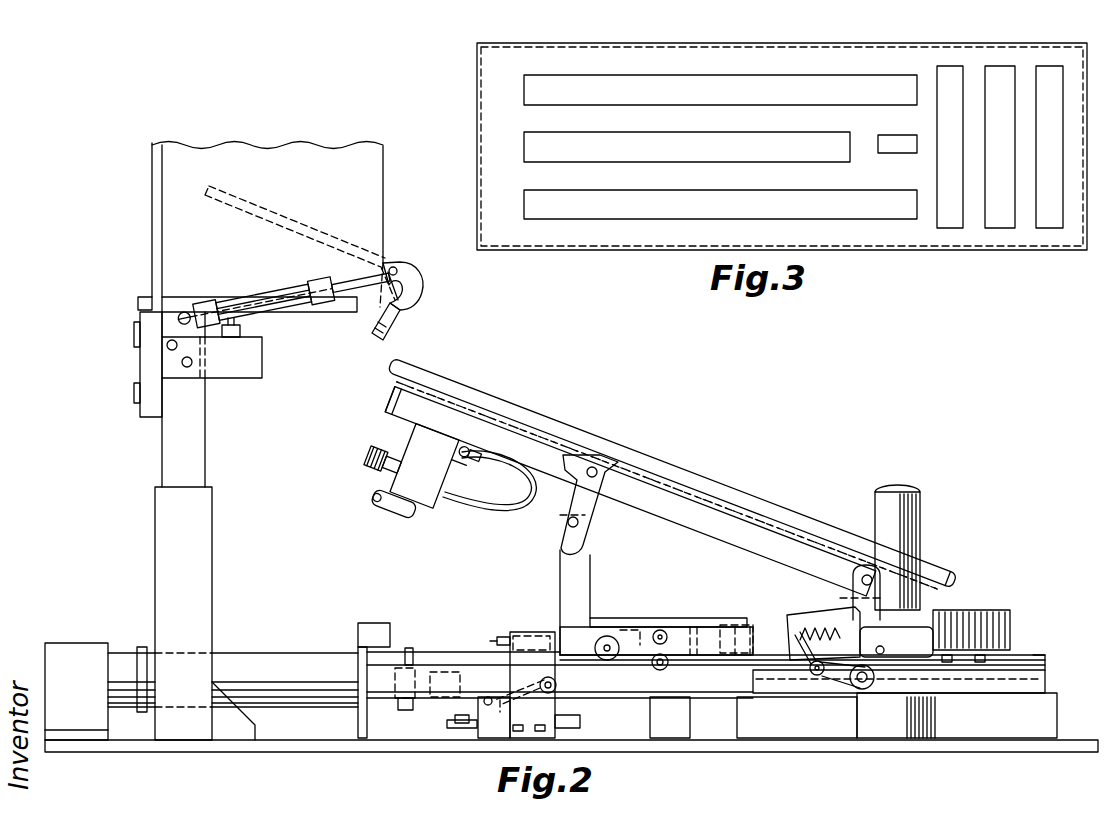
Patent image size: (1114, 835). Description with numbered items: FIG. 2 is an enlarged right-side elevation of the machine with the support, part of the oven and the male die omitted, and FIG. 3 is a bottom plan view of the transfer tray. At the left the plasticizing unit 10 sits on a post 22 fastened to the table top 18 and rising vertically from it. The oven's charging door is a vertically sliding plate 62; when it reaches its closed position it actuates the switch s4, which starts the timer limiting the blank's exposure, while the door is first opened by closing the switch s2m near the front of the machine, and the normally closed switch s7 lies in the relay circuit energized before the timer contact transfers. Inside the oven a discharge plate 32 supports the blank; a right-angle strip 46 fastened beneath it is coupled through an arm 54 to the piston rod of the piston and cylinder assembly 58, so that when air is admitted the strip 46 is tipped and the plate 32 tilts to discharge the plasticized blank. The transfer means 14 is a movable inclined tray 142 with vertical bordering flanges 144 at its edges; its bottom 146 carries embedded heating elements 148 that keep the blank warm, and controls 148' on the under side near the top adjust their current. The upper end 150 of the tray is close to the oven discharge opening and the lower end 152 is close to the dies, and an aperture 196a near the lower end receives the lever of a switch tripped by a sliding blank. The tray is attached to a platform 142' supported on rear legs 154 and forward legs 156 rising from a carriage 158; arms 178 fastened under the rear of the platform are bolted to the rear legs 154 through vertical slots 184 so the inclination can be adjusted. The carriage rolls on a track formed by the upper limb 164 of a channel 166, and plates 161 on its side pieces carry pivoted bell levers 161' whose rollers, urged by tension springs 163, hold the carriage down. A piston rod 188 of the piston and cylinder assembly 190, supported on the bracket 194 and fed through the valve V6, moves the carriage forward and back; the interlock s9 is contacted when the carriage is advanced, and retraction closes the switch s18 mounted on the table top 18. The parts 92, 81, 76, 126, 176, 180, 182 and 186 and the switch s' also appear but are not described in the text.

In FIG. 3, the vertical bordering flanges 144 is at (693, 45).
In FIG. 3, the bottom of the tray 146 is at (663, 236).
In FIG. 3, the heating elements 148 is at (793, 176).
In FIG. 3, the aperture 196a is at (880, 146).
In FIG. 2, the plasticizing unit 10 is at (140, 238).
In FIG. 2, the vertically sliding plate 62 is at (160, 187).
In FIG. 2, the discharge plate 32 is at (282, 235).
In FIG. 2, the switch s4 is at (140, 310).
In FIG. 2, the switch s2m is at (140, 335).
In FIG. 2, the switch s' is at (104, 396).
In FIG. 2, the normally closed switch s7 is at (220, 365).
In FIG. 2, the post 22 is at (195, 437).
In FIG. 2, the piston and cylinder assembly 58 is at (268, 292).
In FIG. 2, the arm 54 is at (416, 288).
In FIG. 2, the right-angle strip 46 is at (382, 337).
In FIG. 2, the upper end of the tray 150 is at (393, 363).
In FIG. 2, the inclined tray 142 is at (630, 491).
In FIG. 2, the platform 142' is at (355, 392).
In FIG. 2, the transfer means 14 is at (730, 476).
In FIG. 2, the lower end of the tray 152 is at (942, 576).
In FIG. 2, the controls 148' is at (416, 472).
In FIG. 2, the arms 178 is at (592, 500).
In FIG. 2, the pivot pin 180 is at (582, 478).
In FIG. 2, the pin 182 is at (570, 528).
In FIG. 2, the vertical slots 184 is at (586, 553).
In FIG. 2, the rear legs 154 is at (582, 590).
In FIG. 2, the table body 186 is at (702, 622).
In FIG. 2, the carriage 158 is at (757, 620).
In FIG. 2, the post 126 is at (882, 507).
In FIG. 2, the lever 176 is at (862, 574).
In FIG. 2, the forward legs 156 is at (858, 600).
In FIG. 2, the piston and cylinder assembly 190 is at (283, 656).
In FIG. 2, the bracket 194 is at (368, 722).
In FIG. 2, the channel 166 is at (1035, 680).
In FIG. 2, the upper limb 164 is at (1030, 665).
In FIG. 2, the carriage interlock s9 is at (525, 633).
In FIG. 2, the piston rod 188 is at (598, 688).
In FIG. 2, the normally open switch s18 is at (487, 722).
In FIG. 2, the table top 18 is at (300, 744).
In FIG. 2, the support block 92 is at (92, 735).
In FIG. 2, the valve V6 is at (67, 689).
In FIG. 2, the block 81 is at (1043, 708).
In FIG. 2, the tension spring 163 is at (802, 620).
In FIG. 2, the plates 161 is at (891, 640).
In FIG. 2, the bell levers 161' is at (822, 679).
In FIG. 2, the rack 76 is at (999, 603).